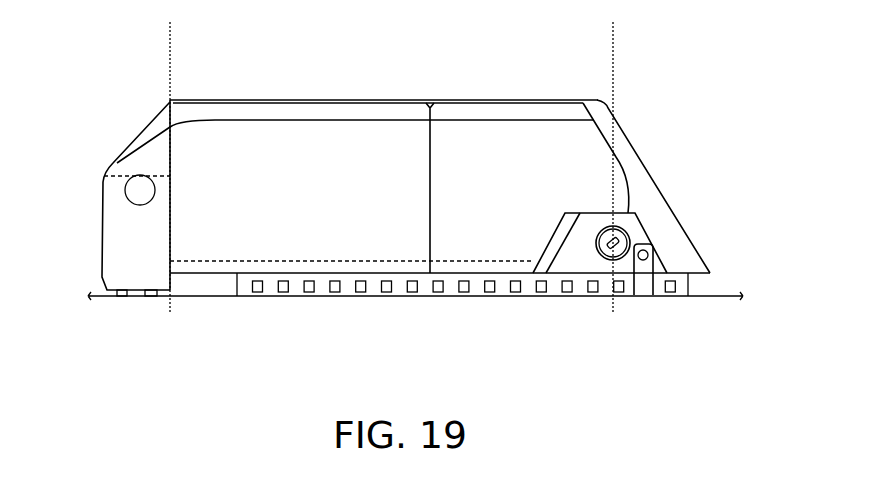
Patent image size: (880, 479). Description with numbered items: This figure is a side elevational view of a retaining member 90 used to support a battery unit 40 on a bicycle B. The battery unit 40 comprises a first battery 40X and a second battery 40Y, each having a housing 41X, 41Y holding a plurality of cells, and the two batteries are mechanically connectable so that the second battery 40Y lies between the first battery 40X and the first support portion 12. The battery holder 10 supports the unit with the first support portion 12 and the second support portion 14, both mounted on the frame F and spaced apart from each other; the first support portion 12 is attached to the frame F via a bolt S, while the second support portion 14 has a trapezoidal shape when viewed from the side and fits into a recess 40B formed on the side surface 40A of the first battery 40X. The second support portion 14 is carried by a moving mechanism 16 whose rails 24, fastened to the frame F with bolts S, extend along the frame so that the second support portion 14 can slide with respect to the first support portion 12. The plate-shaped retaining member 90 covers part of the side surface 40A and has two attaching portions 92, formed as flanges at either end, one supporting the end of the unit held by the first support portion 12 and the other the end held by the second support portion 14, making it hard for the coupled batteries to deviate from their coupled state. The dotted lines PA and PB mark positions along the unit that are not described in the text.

The battery holder 10 is at (397, 163).
The first support portion 12 is at (122, 143).
The second support portion 14 is at (597, 211).
The moving mechanism 16 is at (497, 358).
The rails 24 is at (500, 298).
The battery unit 40 is at (384, 153).
The side surface 40A is at (244, 98).
The recess 40B is at (576, 234).
The first battery 40X is at (512, 93).
The second battery 40Y is at (401, 98).
The housing 41X is at (554, 98).
The housing 41Y is at (297, 98).
The retaining member 90 is at (508, 98).
The attaching portion 92 is at (165, 104).
The bicycle B is at (724, 236).
The frame F is at (722, 295).
The bolt S is at (151, 310).
The section plane A PA is at (168, 157).
The section plane B PB is at (613, 156).